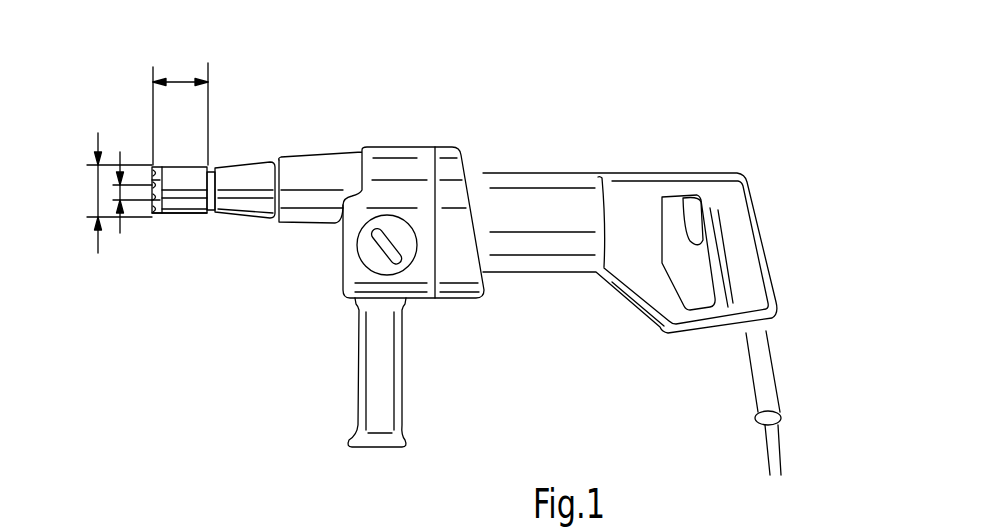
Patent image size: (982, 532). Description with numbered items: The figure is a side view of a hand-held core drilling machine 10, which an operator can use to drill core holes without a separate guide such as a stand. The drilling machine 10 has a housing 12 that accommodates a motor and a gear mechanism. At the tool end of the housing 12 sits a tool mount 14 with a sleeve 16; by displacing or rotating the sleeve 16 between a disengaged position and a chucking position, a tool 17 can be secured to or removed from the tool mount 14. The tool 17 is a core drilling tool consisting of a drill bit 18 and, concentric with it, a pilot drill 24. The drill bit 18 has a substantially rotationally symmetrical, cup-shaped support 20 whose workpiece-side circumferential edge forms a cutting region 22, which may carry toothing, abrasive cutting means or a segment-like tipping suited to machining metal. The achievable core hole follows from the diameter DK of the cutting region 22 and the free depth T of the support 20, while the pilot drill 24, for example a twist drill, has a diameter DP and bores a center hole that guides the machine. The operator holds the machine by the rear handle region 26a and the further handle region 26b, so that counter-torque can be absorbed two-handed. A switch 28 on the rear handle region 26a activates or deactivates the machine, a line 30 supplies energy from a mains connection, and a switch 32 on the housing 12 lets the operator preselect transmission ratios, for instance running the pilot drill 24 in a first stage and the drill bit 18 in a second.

The drilling machine 10 is at (542, 123).
The housing 12 is at (578, 173).
The tool mount 14 is at (236, 157).
The sleeve 16 is at (247, 165).
The tool 17 is at (172, 278).
The drill bit 18 is at (184, 222).
The support 20 is at (177, 167).
The cutting region 22 is at (152, 205).
The pilot drill 24 is at (148, 186).
The rear handle region 26a is at (743, 272).
The handle region 26b is at (380, 398).
The switch 28 is at (690, 208).
The line 30 is at (770, 445).
The switch 32 is at (370, 256).
The diameter of the cutting region DK is at (95, 192).
The diameter of the pilot drill DP is at (118, 195).
The free depth T is at (178, 82).